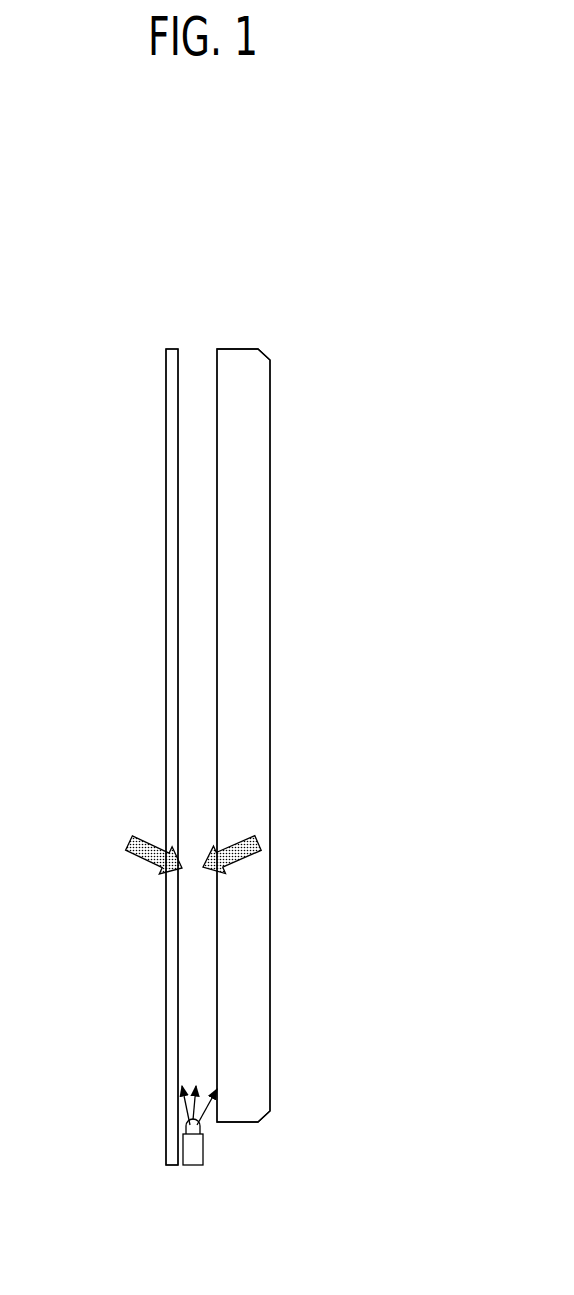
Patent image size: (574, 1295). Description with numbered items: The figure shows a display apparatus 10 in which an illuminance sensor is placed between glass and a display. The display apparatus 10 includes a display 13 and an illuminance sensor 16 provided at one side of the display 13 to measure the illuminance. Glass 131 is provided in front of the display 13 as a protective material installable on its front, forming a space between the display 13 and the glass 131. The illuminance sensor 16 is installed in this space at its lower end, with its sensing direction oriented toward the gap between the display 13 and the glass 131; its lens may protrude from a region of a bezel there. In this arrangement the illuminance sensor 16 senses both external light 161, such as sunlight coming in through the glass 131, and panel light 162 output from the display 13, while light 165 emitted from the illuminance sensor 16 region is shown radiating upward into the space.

The display apparatus 10 is at (288, 337).
The display 13 is at (270, 501).
The glass 131 is at (166, 492).
The external light 161 is at (127, 854).
The panel light 162 is at (262, 844).
The light emitted from light source 165 is at (188, 1113).
The illuminance sensor 16 is at (193, 1167).